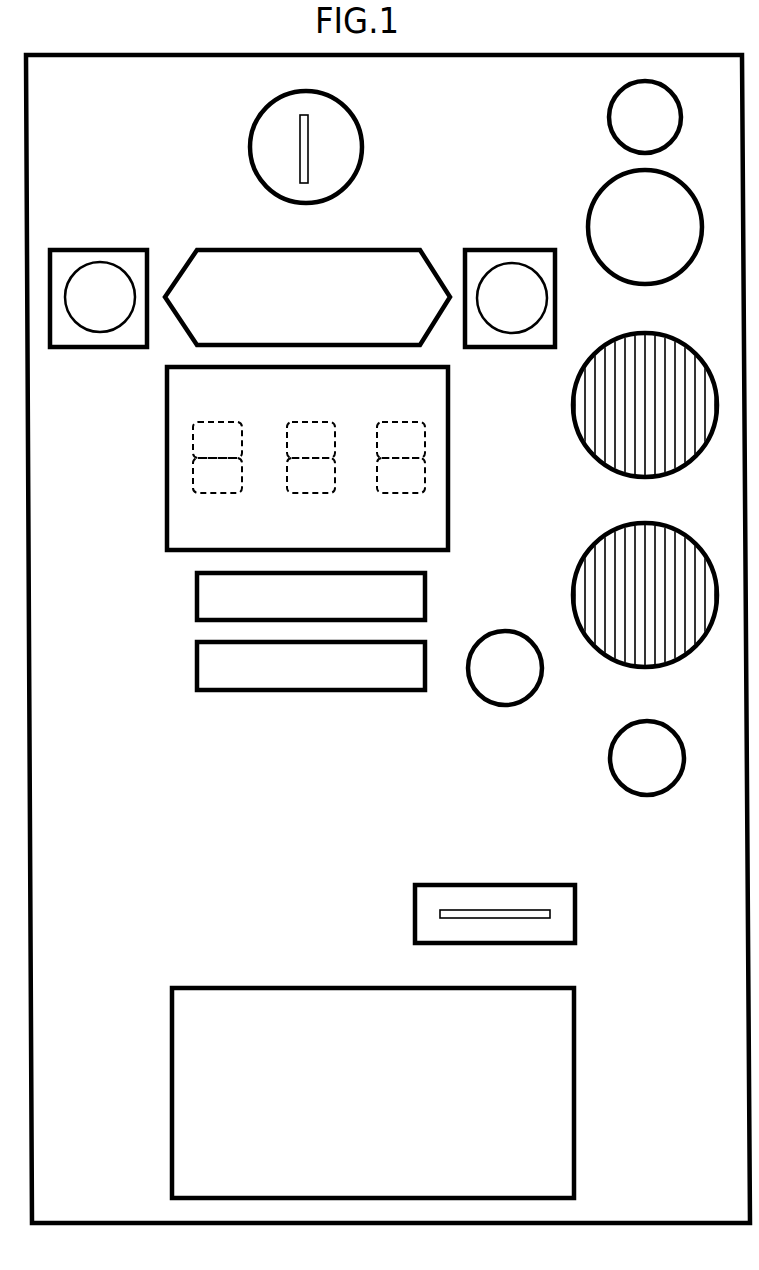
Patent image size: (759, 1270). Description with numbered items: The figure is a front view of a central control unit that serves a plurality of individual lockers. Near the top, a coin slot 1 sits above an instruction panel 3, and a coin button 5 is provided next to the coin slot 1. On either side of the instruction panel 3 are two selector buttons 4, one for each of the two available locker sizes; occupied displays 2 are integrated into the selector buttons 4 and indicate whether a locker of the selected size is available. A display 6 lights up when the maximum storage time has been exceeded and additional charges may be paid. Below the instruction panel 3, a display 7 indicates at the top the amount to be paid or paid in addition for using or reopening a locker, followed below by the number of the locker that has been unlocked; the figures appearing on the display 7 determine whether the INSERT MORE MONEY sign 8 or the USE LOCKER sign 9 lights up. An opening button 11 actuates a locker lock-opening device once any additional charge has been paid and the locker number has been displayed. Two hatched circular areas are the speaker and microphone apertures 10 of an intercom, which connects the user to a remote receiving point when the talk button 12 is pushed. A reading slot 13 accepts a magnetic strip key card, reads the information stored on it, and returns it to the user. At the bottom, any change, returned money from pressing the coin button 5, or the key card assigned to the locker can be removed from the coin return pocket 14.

The coin slot 1 is at (272, 145).
The occupied display 2 is at (93, 285).
The instruction panel 3 is at (302, 292).
The selector button 4 is at (65, 325).
The coin button 5 is at (643, 117).
The display 6 is at (625, 208).
The display 7 is at (192, 487).
The INSERT MORE MONEY sign 8 is at (252, 602).
The USE LOCKER sign 9 is at (263, 670).
The speaker and microphone apertures 10 is at (612, 500).
The opening button 11 is at (490, 680).
The talk button 12 is at (633, 768).
The reading slot 13 is at (437, 917).
The coin return pocket 14 is at (238, 1053).